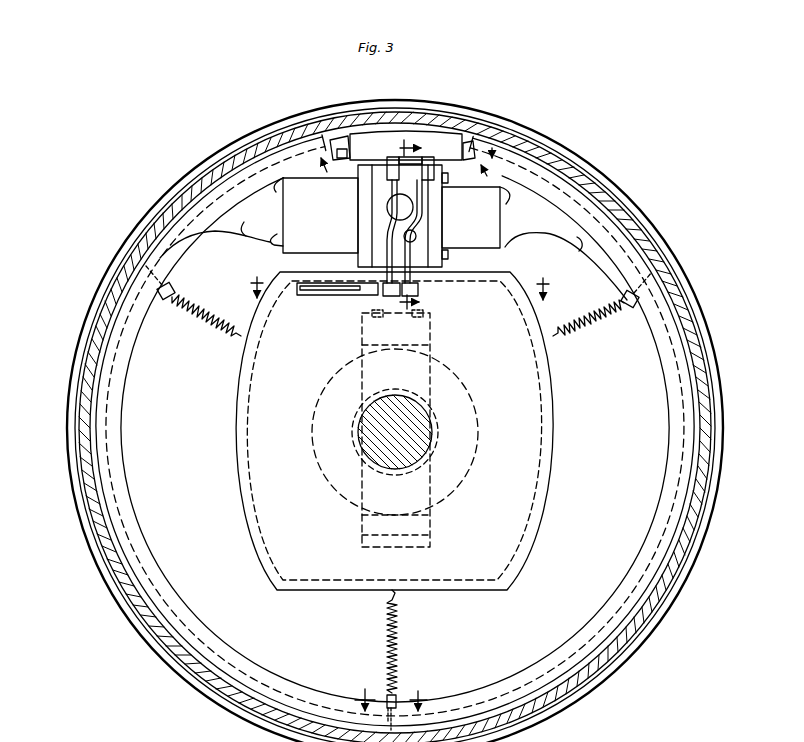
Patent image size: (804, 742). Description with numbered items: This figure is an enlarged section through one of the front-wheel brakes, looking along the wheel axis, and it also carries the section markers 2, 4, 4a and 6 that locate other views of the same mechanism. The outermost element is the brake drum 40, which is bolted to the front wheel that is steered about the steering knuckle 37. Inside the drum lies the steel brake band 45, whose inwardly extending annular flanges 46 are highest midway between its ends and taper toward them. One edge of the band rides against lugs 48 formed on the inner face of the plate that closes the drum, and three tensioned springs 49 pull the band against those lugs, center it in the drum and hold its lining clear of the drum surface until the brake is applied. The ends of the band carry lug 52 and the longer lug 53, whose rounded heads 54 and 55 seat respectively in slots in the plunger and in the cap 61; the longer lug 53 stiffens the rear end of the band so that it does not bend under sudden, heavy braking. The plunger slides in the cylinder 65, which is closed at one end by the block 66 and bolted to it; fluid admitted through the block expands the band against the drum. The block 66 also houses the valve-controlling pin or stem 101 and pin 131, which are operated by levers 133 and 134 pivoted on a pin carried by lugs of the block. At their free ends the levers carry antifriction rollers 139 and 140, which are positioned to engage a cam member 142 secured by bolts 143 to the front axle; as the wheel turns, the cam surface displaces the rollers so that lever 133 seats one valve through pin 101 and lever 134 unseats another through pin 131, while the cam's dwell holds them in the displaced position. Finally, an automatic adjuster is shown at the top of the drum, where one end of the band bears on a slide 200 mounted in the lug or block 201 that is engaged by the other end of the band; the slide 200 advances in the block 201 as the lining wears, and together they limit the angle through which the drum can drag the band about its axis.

The steering knuckle 37 is at (428, 477).
The brake drum 40 is at (612, 215).
The casing ring ends 4a is at (411, 160).
The brake band 45 is at (633, 588).
The annular flanges 46 is at (222, 643).
The lugs 48 is at (609, 197).
The tensioned springs 49 is at (203, 313).
The lug 52 is at (215, 241).
The lug 53 is at (567, 253).
The rounded head 54 is at (265, 252).
The rounded head 55 is at (562, 266).
The cap 61 is at (497, 220).
The cylinder 65 is at (283, 207).
The block 66 is at (377, 232).
The pin or stem 101 is at (387, 207).
The pin 131 is at (418, 235).
The lever 133 is at (395, 188).
The lever 134 is at (422, 198).
The antifriction roller 139 is at (383, 293).
The antifriction roller 140 is at (418, 292).
The cam member 142 is at (327, 292).
The bolts 143 is at (405, 315).
The slide 200 is at (344, 138).
The lug or block 201 is at (374, 138).
The section line 2 is at (398, 288).
The section line 4 is at (391, 694).
The section line 6 is at (403, 221).